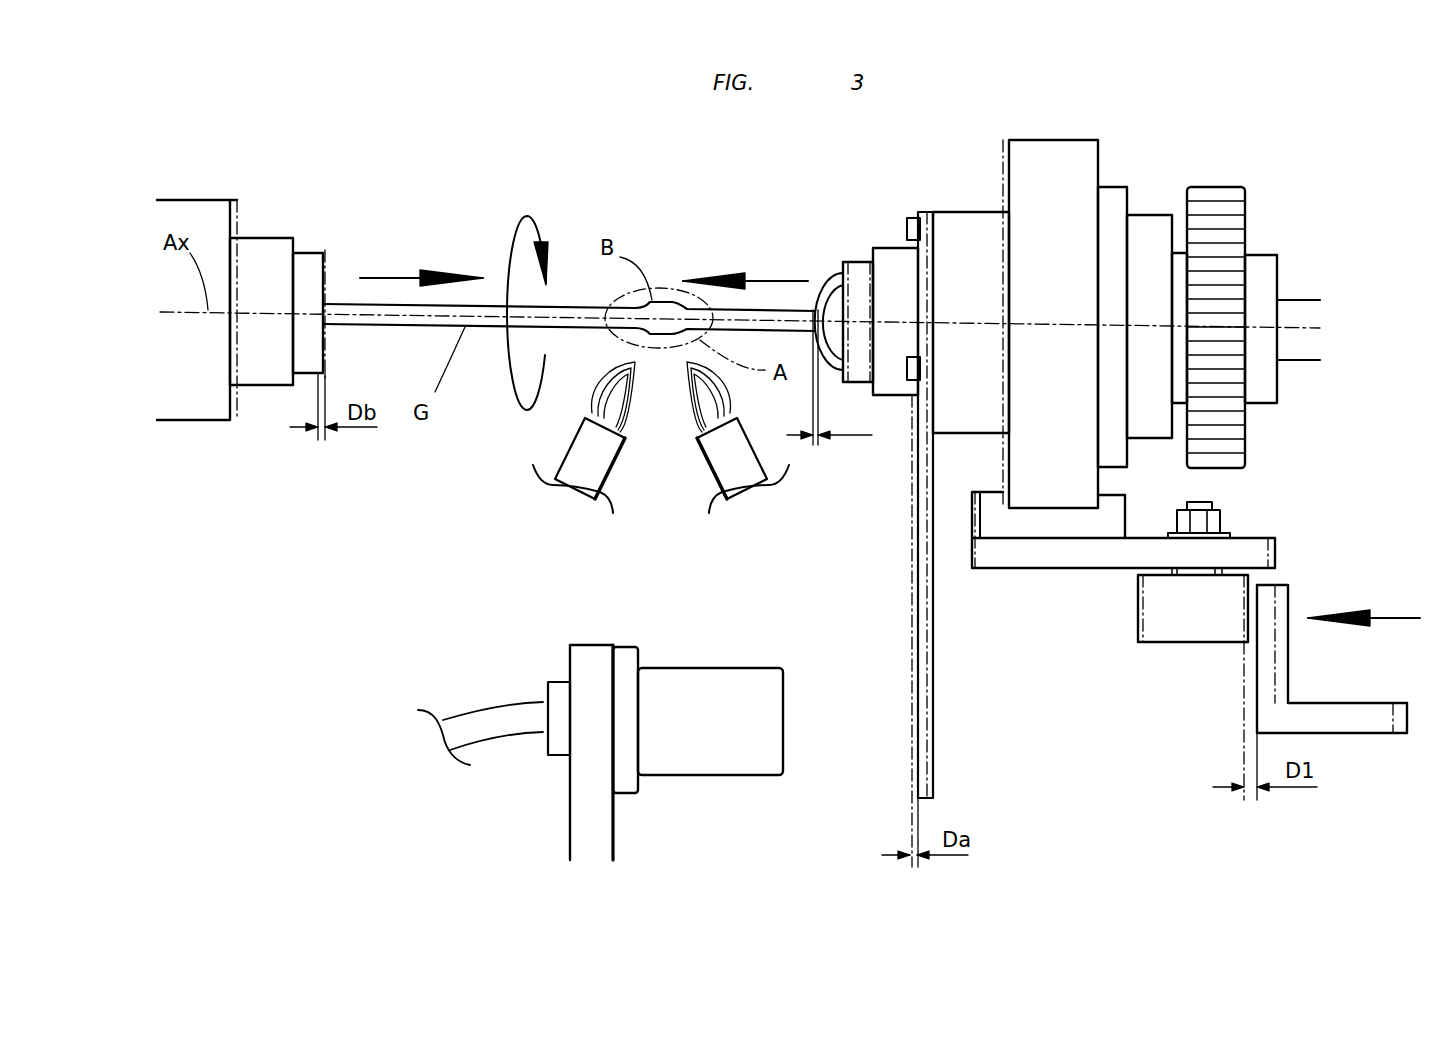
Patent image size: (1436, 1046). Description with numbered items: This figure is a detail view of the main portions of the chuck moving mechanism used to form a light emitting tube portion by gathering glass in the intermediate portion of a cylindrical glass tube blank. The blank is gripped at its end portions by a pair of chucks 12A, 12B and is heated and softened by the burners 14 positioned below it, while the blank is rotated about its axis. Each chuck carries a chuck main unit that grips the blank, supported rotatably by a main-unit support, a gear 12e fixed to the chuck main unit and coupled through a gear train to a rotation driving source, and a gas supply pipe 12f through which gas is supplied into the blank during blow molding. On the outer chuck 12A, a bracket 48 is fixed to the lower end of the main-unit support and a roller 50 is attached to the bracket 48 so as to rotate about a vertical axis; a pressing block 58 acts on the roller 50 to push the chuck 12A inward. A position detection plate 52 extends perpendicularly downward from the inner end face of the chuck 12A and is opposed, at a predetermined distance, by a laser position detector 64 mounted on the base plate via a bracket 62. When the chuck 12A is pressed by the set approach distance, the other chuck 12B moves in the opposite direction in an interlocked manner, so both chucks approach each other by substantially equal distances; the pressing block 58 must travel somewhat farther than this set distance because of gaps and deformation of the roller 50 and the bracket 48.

The chuck 12A is at (1065, 499).
The chuck 12B is at (289, 330).
The gear 12e is at (1230, 243).
The gas supply pipe 12f is at (1300, 350).
The burners 14 is at (715, 460).
The bracket 48 is at (1097, 555).
The roller 50 is at (1193, 628).
The position detection plate 52 is at (922, 655).
The pressing block 58 is at (1283, 665).
The bracket 62 is at (587, 787).
The laser position detector 64 is at (713, 688).